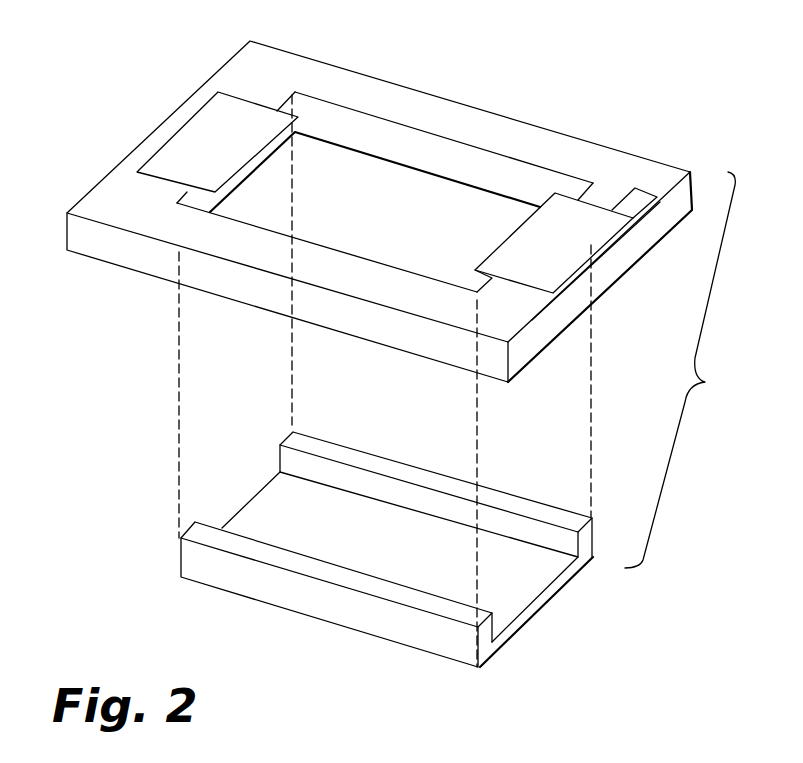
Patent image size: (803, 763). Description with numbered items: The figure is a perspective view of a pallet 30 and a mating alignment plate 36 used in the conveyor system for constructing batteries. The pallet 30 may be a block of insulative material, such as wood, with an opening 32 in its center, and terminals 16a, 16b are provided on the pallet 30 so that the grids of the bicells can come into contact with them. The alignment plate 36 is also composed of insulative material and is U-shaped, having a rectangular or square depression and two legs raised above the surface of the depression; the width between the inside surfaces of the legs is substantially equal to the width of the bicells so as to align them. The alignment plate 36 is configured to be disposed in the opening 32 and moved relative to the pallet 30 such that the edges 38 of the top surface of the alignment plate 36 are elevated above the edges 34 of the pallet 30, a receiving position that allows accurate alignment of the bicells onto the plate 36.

The pallet 30 is at (520, 125).
The opening 32 is at (411, 168).
The edges of pallet 34 is at (348, 102).
The terminal 16a is at (193, 148).
The terminal 16b is at (603, 233).
The alignment plate 36 is at (508, 592).
The edges of top surface of alignment plate 38 is at (387, 457).